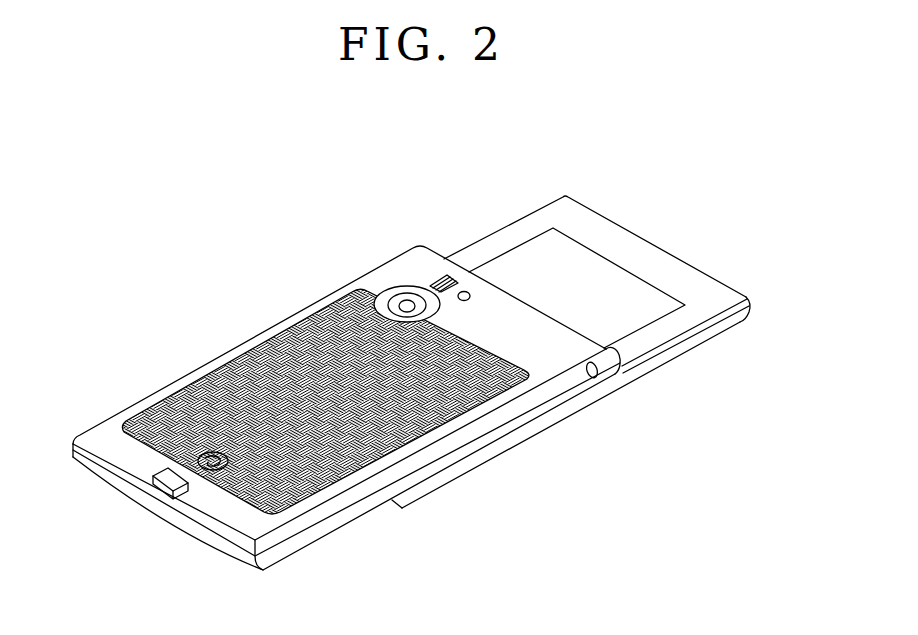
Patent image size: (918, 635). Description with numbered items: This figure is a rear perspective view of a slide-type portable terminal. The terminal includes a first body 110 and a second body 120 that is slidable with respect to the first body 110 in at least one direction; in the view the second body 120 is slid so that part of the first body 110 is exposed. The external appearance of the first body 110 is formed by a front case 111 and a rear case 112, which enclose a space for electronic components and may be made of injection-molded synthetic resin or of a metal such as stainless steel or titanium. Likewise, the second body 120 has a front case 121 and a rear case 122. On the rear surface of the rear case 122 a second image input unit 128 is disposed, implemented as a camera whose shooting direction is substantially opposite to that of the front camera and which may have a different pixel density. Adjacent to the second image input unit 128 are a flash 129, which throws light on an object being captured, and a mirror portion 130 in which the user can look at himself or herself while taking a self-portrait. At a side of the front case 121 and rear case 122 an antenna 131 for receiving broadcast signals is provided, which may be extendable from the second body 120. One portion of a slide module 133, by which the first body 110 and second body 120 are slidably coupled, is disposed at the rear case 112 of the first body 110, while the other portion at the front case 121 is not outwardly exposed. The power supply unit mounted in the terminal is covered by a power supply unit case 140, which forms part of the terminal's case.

The first body 110 is at (518, 213).
The front case 111 is at (689, 345).
The rear case 112 is at (703, 327).
The second body 120 is at (187, 363).
The front case 121 is at (290, 547).
The rear case 122 is at (305, 522).
The second image input unit 128 is at (406, 304).
The flash 129 is at (437, 277).
The mirror portion 130 is at (464, 292).
The antenna 131 is at (597, 376).
The slide module 133 is at (627, 293).
The power supply unit case 140 is at (293, 343).